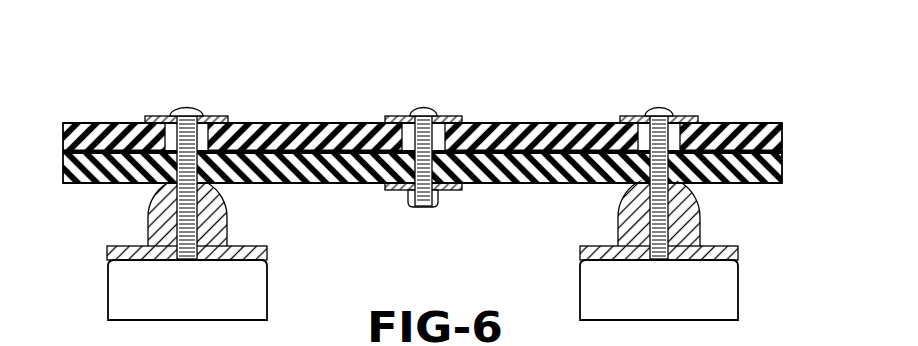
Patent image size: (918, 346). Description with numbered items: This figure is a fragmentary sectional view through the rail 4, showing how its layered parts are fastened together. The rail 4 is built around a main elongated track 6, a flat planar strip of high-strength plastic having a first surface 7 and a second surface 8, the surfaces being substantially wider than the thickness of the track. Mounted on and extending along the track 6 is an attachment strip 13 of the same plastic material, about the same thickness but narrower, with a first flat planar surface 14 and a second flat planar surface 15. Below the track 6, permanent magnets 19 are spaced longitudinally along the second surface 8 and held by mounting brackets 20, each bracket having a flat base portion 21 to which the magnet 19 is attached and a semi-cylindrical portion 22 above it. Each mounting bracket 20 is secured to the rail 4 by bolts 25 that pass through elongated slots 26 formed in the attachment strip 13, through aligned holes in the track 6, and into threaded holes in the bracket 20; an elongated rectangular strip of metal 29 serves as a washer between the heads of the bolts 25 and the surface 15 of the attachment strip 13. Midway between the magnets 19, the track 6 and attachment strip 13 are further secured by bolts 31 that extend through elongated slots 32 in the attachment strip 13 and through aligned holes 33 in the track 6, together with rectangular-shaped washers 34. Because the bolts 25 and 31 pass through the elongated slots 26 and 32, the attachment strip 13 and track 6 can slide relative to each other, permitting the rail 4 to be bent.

The rail 4 is at (100, 121).
The main elongated track 6 is at (88, 185).
The first surface 7 is at (328, 150).
The second surface 8 is at (308, 185).
The attachment strip 13 is at (578, 121).
The first flat planar surface 14 is at (527, 156).
The second flat planar surface 15 is at (530, 122).
The permanent magnet 19 is at (128, 298).
The mounting bracket 20 is at (146, 232).
The flat base portion 21 is at (736, 247).
The semi-cylindrical portion 22 is at (628, 213).
The bolt 25 is at (183, 107).
The elongated slot 26 is at (675, 130).
The elongated rectangular strip of metal 29 is at (212, 117).
The bolt 31 is at (421, 107).
The elongated slot 32 is at (407, 138).
The hole 33 is at (422, 188).
The rectangular-shaped washer 34 is at (451, 116).